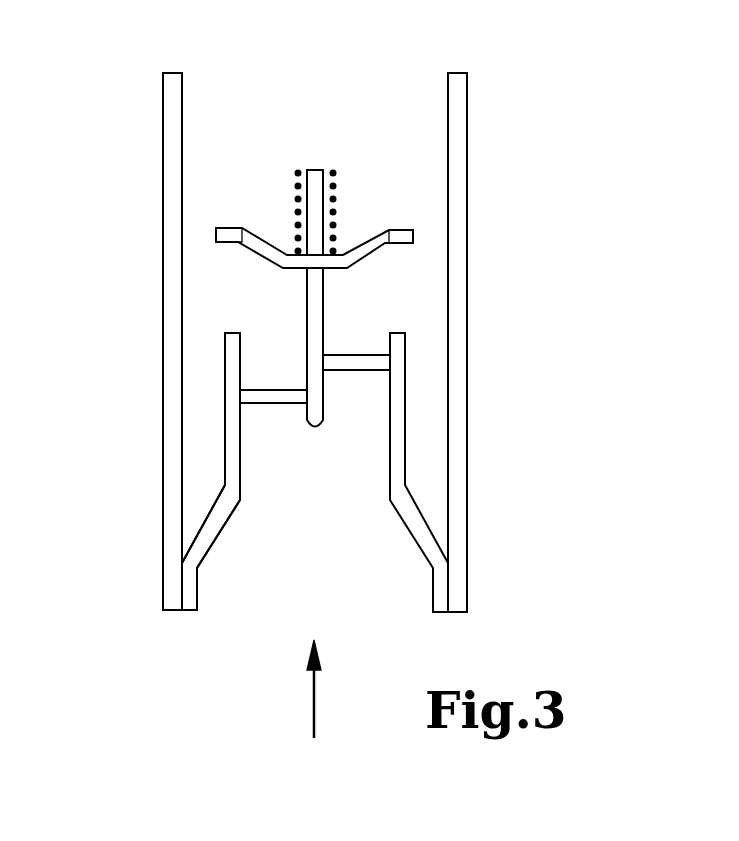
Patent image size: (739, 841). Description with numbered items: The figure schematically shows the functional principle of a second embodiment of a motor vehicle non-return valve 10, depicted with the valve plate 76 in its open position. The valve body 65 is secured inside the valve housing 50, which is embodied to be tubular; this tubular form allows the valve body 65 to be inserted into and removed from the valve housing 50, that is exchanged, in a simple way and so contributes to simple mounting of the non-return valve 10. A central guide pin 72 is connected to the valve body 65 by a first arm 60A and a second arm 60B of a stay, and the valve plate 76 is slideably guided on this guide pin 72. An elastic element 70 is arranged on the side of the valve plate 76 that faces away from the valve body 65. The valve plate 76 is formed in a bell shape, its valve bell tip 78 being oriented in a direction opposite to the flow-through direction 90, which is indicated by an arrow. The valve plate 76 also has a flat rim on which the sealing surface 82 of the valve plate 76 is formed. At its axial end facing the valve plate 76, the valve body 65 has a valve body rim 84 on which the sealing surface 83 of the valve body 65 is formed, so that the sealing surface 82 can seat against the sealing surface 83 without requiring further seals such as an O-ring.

The motor vehicle non-return valve 10 is at (143, 165).
The valve housing 50 is at (455, 412).
The first arm 60A is at (273, 403).
The second arm 60B is at (353, 370).
The valve body 65 is at (203, 543).
The elastic element 70 is at (337, 195).
The guide pin 72 is at (317, 307).
The valve plate 76 is at (387, 233).
The valve bell tip 78 is at (292, 270).
The sealing surface of the valve plate 82 is at (230, 243).
The sealing surface of the valve body 83 is at (222, 332).
The valve body rim 84 is at (233, 330).
The flow-through direction 90 is at (318, 692).